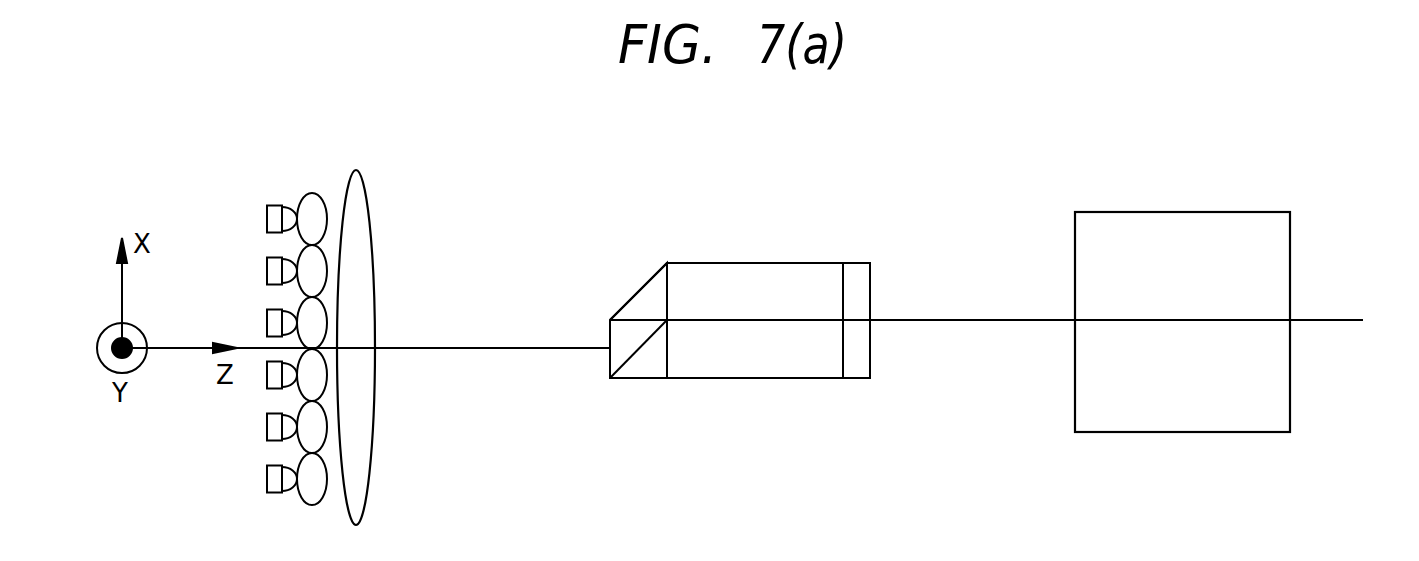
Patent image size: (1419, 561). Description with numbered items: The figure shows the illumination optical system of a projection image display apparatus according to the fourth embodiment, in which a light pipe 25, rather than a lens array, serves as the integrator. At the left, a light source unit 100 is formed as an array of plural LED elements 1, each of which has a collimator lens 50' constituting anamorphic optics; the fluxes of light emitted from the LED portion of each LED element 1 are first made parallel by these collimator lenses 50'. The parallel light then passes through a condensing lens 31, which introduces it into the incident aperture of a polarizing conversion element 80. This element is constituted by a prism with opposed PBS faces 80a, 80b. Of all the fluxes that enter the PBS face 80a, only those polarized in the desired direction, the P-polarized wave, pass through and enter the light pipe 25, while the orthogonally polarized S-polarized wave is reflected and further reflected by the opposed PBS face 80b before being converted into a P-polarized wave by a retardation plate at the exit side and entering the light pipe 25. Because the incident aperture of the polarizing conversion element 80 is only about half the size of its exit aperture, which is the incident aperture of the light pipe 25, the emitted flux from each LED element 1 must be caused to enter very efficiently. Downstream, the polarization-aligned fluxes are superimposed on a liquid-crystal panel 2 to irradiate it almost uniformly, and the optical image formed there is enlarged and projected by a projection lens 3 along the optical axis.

The light source unit 100 is at (256, 498).
The LED element 1 is at (277, 203).
The collimator lens 50' is at (314, 301).
The condensing lens 31 is at (360, 203).
The polarizing conversion element 80 is at (623, 343).
The PBS face 80a is at (637, 362).
The PBS face 80b is at (633, 292).
The light pipe 25 is at (748, 278).
The liquid-crystal panel 2 is at (857, 278).
The projection lens 3 is at (1178, 228).